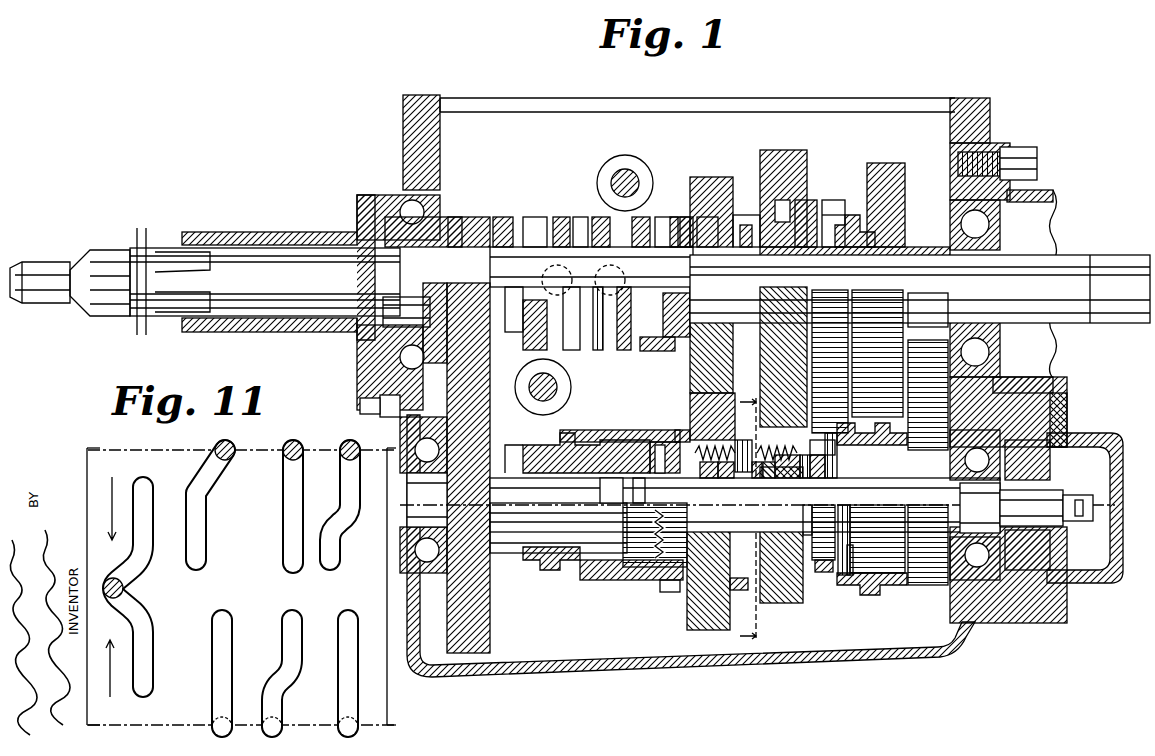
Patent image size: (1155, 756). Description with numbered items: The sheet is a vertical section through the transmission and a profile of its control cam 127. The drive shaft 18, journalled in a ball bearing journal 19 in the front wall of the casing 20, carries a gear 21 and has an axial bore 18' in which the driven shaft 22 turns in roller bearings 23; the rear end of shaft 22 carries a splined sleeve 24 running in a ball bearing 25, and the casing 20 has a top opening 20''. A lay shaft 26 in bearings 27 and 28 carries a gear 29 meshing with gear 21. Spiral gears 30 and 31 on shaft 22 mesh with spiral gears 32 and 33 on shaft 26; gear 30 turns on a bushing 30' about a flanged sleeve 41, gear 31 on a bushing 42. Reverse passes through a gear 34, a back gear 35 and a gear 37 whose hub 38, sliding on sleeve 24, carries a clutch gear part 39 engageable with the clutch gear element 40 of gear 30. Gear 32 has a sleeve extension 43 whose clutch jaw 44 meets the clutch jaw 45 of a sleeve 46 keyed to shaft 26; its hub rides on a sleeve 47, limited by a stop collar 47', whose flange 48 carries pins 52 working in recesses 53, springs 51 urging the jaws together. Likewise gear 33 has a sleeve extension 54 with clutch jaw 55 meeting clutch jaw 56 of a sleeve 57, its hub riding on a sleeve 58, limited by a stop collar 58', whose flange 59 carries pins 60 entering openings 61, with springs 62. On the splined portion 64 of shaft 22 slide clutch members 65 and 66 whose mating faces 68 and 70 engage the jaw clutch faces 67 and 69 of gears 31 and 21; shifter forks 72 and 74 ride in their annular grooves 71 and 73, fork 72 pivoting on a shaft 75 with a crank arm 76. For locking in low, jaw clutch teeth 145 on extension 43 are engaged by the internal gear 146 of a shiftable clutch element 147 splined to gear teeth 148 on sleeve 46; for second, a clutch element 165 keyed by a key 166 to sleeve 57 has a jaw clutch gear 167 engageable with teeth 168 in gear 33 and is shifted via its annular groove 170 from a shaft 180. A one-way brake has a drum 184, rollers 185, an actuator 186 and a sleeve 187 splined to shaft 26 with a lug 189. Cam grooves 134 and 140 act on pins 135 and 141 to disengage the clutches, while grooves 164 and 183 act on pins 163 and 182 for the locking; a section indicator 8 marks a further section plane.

In FIG. 1, the section line 8 is at (747, 517).
In FIG. 1, the input shaft 18 is at (205, 268).
In FIG. 1, the input shaft bushing 18' is at (408, 295).
In FIG. 1, the front bearing housing 19 is at (372, 210).
In FIG. 1, the gear housing 20 is at (707, 386).
In FIG. 1, the housing cover 20'' is at (467, 88).
In FIG. 1, the bushing 21 is at (461, 221).
In FIG. 1, the output shaft 22 is at (1080, 257).
In FIG. 1, the bushing ring 23 is at (458, 234).
In FIG. 1, the bushing 24 is at (920, 249).
In FIG. 1, the rear ball bearing 25 is at (973, 218).
In FIG. 1, the countershaft 26 is at (545, 550).
In FIG. 1, the countershaft front bearing 27 is at (433, 547).
In FIG. 1, the countershaft rear bearing nut 28 is at (980, 523).
In FIG. 1, the front wall 29 is at (476, 622).
In FIG. 1, the gear 30 is at (783, 184).
In FIG. 1, the gear hub 30' is at (748, 207).
In FIG. 1, the gear hub 31 is at (699, 190).
In FIG. 1, the gear 32 is at (788, 616).
In FIG. 1, the gear 33 is at (693, 628).
In FIG. 1, the countershaft gear 34 is at (920, 527).
In FIG. 1, the gear 35 is at (922, 380).
In FIG. 1, the gear 37 is at (885, 172).
In FIG. 1, the clutch member 38 is at (847, 224).
In FIG. 1, the clutch ring 39 is at (830, 200).
In FIG. 1, the clutch ring 40 is at (805, 202).
In FIG. 1, the spacer 41 is at (747, 225).
In FIG. 1, the clutch sleeve 42 is at (698, 218).
In FIG. 1, the clutch collar 43 is at (822, 446).
In FIG. 1, the countershaft gear 44 is at (820, 513).
In FIG. 1, the spacer 45 is at (845, 528).
In FIG. 1, the countershaft gear 46 is at (875, 530).
In FIG. 1, the washer 47 is at (777, 484).
In FIG. 1, the washer 47' is at (827, 510).
In FIG. 1, the ring 48 is at (753, 478).
In FIG. 1, the clutch ring 51 is at (805, 455).
In FIG. 1, the clutch ring 52 is at (785, 461).
In FIG. 1, the clutch element 53 is at (810, 448).
In FIG. 1, the shift collar 54 is at (667, 443).
In FIG. 1, the spring 55 is at (662, 513).
In FIG. 1, the sleeve 56 is at (640, 484).
In FIG. 1, the collar 57 is at (650, 443).
In FIG. 1, the ring 58 is at (736, 478).
In FIG. 1, the ring 58' is at (647, 487).
In FIG. 1, the key 59 is at (743, 590).
In FIG. 1, the ring 60 is at (715, 474).
In FIG. 1, the plunger 61 is at (747, 443).
In FIG. 1, the spring 62 is at (710, 460).
In FIG. 1, the clutch sleeve 64 is at (552, 237).
In FIG. 1, the gear 65 is at (625, 344).
In FIG. 1, the clutch member 66 is at (531, 338).
In FIG. 1, the gear 67 is at (684, 324).
In FIG. 1, the ring 68 is at (650, 348).
In FIG. 1, the clutch ring 69 is at (504, 216).
In FIG. 1, the sleeve 70 is at (543, 312).
In FIG. 1, the gear 71 is at (598, 342).
In FIG. 1, the shifter rail 72 is at (592, 209).
In FIG. 1, the shifter rail 73 is at (580, 333).
In FIG. 1, the shifter rail 74 is at (542, 392).
In FIG. 1, the shifter rail 75 is at (624, 183).
In FIG. 1, the shifter rail 76 is at (544, 392).
In FIG. 1, the ring 145 is at (825, 574).
In FIG. 1, the clutch sleeve 146 is at (832, 434).
In FIG. 1, the shift fork 147 is at (860, 586).
In FIG. 1, the shift fork 148 is at (900, 600).
In FIG. 1, the shift fork 165 is at (600, 580).
In FIG. 1, the shift fork 166 is at (613, 443).
In FIG. 1, the pin 167 is at (667, 592).
In FIG. 1, the pin 168 is at (698, 426).
In FIG. 1, the fork lug 170 is at (568, 570).
In FIG. 1, the nut 180 is at (1050, 464).
In FIG. 1, the rear housing 184 is at (1053, 420).
In FIG. 1, the rear housing lower part 185 is at (1020, 574).
In FIG. 1, the end cap 186 is at (1065, 442).
In FIG. 1, the lock nut 187 is at (1050, 550).
In FIG. 1, the lock washer 189 is at (1056, 528).
In FIG. 11, the shift plate 127 is at (100, 456).
In FIG. 11, the cam slot 134 is at (142, 605).
In FIG. 11, the cam follower 135 is at (128, 578).
In FIG. 11, the cam slot 140 is at (200, 512).
In FIG. 11, the cam follower 141 is at (230, 448).
In FIG. 11, the cam follower 163 is at (350, 444).
In FIG. 11, the cam slot 164 is at (335, 562).
In FIG. 11, the cam follower 182 is at (293, 442).
In FIG. 11, the cam slot 183 is at (285, 646).